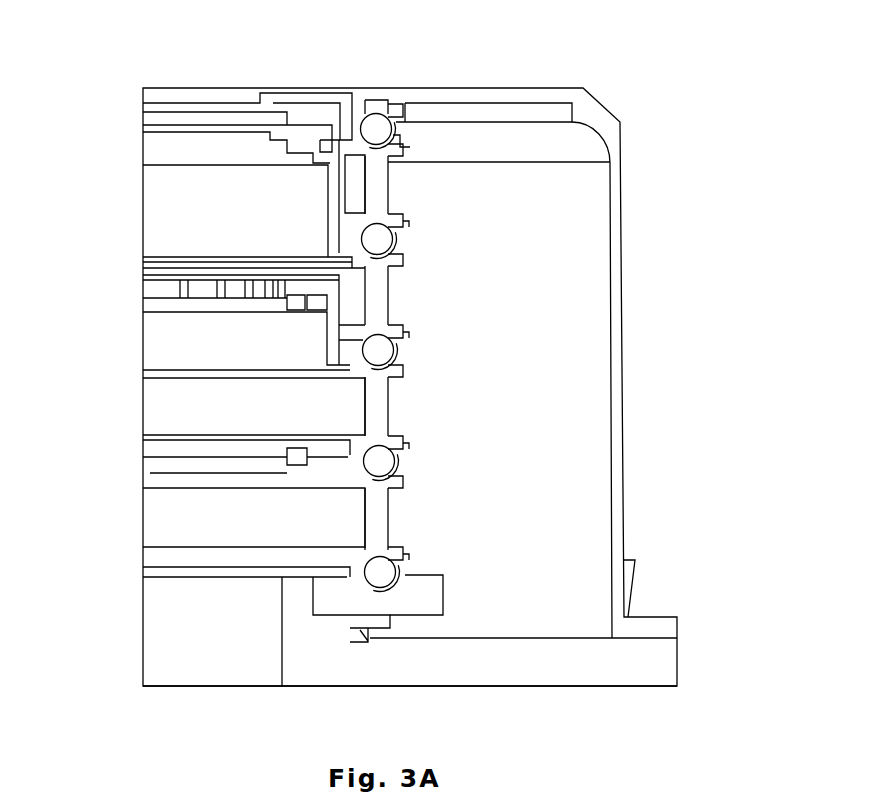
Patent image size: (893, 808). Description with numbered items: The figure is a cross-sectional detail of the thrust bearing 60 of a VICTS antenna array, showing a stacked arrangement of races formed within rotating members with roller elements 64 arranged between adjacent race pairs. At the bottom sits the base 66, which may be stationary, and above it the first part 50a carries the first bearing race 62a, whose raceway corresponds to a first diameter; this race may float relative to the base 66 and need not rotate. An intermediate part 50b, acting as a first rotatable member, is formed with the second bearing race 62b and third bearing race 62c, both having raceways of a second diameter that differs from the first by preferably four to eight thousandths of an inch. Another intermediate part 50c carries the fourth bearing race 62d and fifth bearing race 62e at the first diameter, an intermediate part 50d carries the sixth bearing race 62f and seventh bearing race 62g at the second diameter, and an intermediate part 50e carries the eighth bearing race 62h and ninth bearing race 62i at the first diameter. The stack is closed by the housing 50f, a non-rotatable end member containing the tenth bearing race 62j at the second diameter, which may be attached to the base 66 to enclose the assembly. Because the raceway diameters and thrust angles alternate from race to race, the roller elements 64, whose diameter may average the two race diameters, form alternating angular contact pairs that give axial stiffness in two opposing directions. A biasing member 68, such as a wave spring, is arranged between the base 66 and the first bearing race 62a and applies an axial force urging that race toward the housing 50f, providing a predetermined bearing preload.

The thrust bearing 60 is at (94, 98).
The first part 50a is at (330, 593).
The intermediate part 50b is at (390, 515).
The intermediate part 50c is at (390, 403).
The intermediate part 50d is at (390, 292).
The intermediate part 50e is at (390, 196).
The housing 50f is at (375, 97).
The first bearing race 62a is at (388, 592).
The second bearing race 62b is at (407, 550).
The third bearing race 62c is at (405, 483).
The fourth bearing race 62d is at (405, 440).
The fifth bearing race 62e is at (405, 367).
The sixth bearing race 62f is at (405, 332).
The seventh bearing race 62g is at (403, 253).
The eighth bearing race 62h is at (403, 223).
The ninth bearing race 62i is at (403, 140).
The tenth bearing race 62j is at (391, 112).
The roller elements 64 is at (375, 240).
The base 66 is at (617, 687).
The biasing member 68 is at (363, 628).